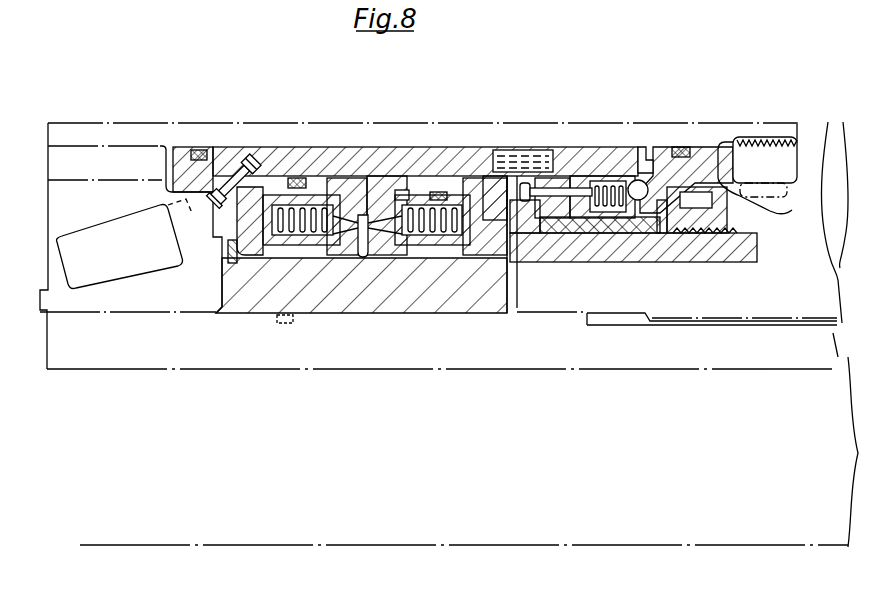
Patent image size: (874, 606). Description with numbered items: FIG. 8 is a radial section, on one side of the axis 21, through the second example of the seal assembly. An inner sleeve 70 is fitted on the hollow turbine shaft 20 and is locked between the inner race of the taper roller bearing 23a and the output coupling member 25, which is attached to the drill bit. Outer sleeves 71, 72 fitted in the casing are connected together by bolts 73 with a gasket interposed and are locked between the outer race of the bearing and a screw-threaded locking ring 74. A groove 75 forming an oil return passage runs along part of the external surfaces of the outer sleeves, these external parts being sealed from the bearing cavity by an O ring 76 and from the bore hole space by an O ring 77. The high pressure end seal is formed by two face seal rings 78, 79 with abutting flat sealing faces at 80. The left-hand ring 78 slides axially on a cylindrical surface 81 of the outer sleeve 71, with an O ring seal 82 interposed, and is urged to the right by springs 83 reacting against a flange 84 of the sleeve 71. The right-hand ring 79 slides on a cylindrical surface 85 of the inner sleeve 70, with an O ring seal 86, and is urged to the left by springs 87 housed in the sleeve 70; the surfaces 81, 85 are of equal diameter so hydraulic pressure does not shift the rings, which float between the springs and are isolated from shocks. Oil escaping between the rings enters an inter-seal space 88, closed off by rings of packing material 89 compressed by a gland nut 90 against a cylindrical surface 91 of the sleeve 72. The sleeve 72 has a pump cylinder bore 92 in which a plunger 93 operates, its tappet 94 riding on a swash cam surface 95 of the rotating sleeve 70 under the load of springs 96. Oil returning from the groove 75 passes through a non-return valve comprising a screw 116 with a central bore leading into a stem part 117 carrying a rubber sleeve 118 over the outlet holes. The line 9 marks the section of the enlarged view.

The section line 9- 9 is at (587, 115).
The tubular shaft 20 is at (146, 351).
The axis 21 is at (265, 545).
The taper roller bearing 23a is at (96, 261).
The output coupling member 25 is at (788, 296).
The inner sleeve 70 is at (463, 300).
The outer sleeve 71 is at (463, 166).
The outer sleeve 72 is at (706, 162).
The bolts 73 is at (647, 153).
The screw-threaded locking ring 74 is at (773, 168).
The groove 75 is at (488, 148).
The O ring 76 is at (200, 148).
The O ring 77 is at (678, 150).
The face seal ring 78 is at (346, 192).
The face seal ring 79 is at (400, 190).
The sealing faces 80 is at (374, 198).
The cylindrical surface 81 is at (292, 178).
The O ring seal 82 is at (305, 188).
The springs 83 is at (302, 240).
The flange 84 is at (250, 246).
The cylindrical surface 85 is at (420, 222).
The O ring seal 86 is at (440, 192).
The springs 87 is at (432, 240).
The inter-seal space 88 is at (512, 182).
The rings of packing material 89 is at (624, 233).
The gland nut 90 is at (708, 233).
The cylindrical surface 91 is at (652, 220).
The pump cylinder bore 92 is at (598, 176).
The plunger 93 is at (580, 198).
The tappet 94 is at (548, 188).
The cam surface 95 is at (514, 180).
The springs 96 is at (598, 218).
The screw 116 is at (244, 154).
The stem part 117 is at (218, 210).
The rubber sleeve 118 is at (213, 201).